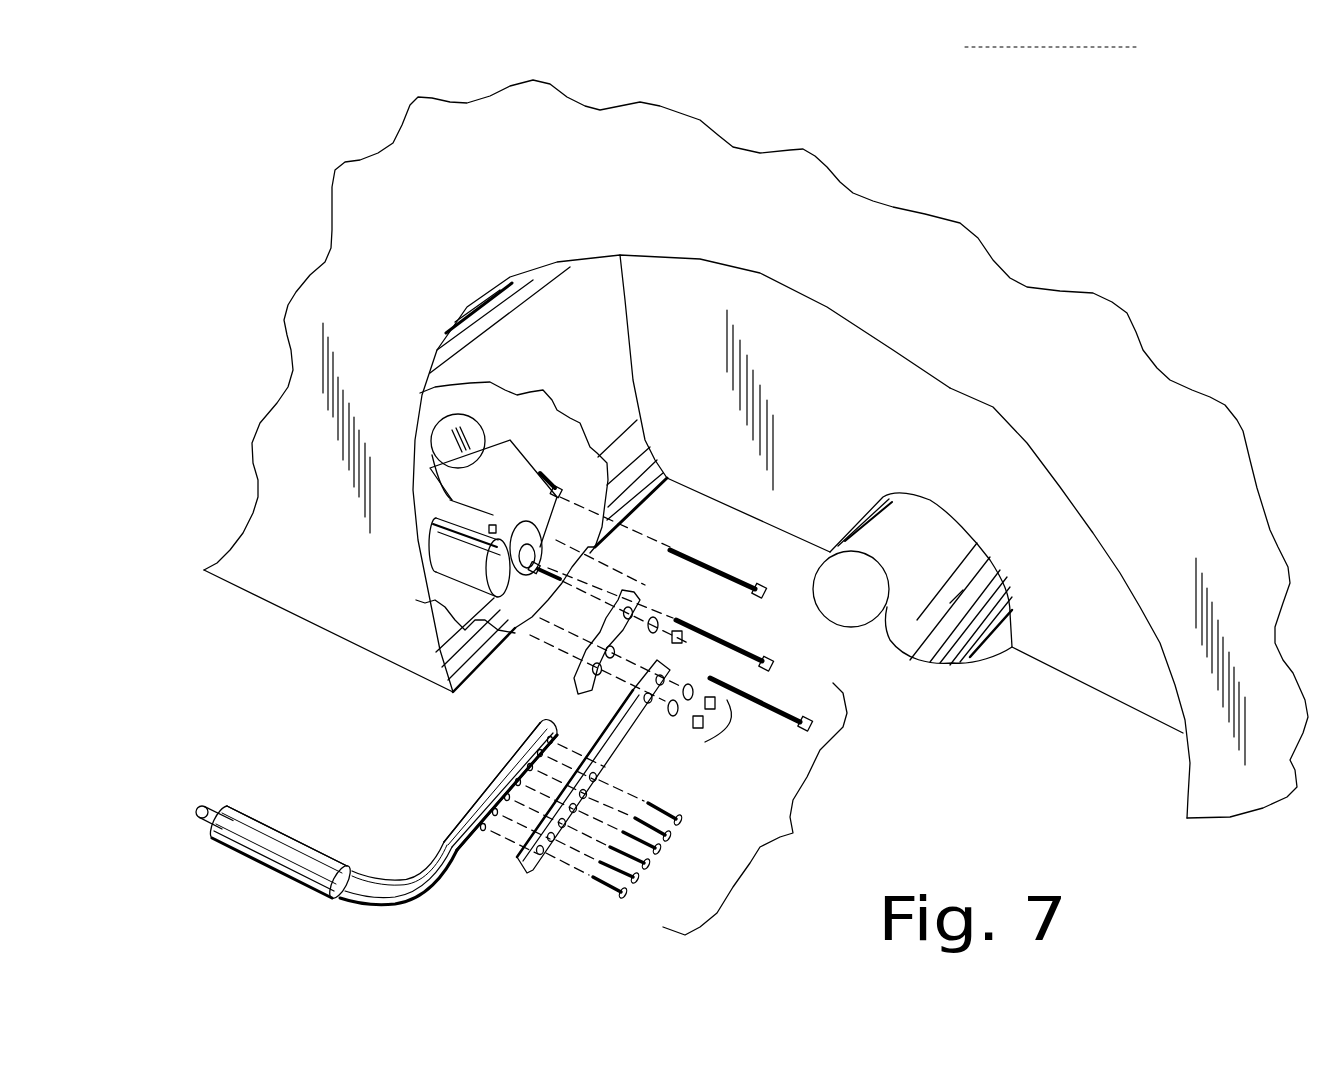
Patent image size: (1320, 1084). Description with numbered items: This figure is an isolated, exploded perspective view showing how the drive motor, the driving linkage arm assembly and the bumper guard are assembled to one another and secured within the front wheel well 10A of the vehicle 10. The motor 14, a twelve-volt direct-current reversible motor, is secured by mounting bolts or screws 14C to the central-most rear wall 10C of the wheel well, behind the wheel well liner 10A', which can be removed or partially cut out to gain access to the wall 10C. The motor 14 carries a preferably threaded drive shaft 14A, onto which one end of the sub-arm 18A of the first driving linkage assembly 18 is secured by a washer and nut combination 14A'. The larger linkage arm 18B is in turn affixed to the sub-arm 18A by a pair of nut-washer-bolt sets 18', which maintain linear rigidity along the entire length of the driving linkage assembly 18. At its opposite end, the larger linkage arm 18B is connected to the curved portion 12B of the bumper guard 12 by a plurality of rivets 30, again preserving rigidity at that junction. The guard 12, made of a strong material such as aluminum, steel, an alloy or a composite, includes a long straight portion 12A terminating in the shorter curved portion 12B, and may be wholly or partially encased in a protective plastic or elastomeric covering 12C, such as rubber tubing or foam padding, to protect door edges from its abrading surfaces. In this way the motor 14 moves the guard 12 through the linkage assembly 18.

The vehicle 10 is at (367, 175).
The front wheel well 10A is at (1097, 640).
The wheel well liner 10A' is at (681, 445).
The central-most wall 10C is at (418, 437).
The bumper guard 12 is at (350, 908).
The long straight portion 12A is at (193, 830).
The curved portion 12B is at (450, 836).
The protective covering 12C is at (362, 858).
The motor 14 is at (507, 463).
The drive shaft 14A is at (464, 548).
The washer and nut combination 14A' is at (725, 635).
The mounting bolts or screws 14C is at (765, 599).
The first driving linkage assembly 18 is at (755, 809).
The sub-arm 18A is at (590, 683).
The larger linkage arm 18B is at (632, 737).
The nut-washer-bolt sets 18' is at (708, 698).
The rivets 30 is at (598, 893).